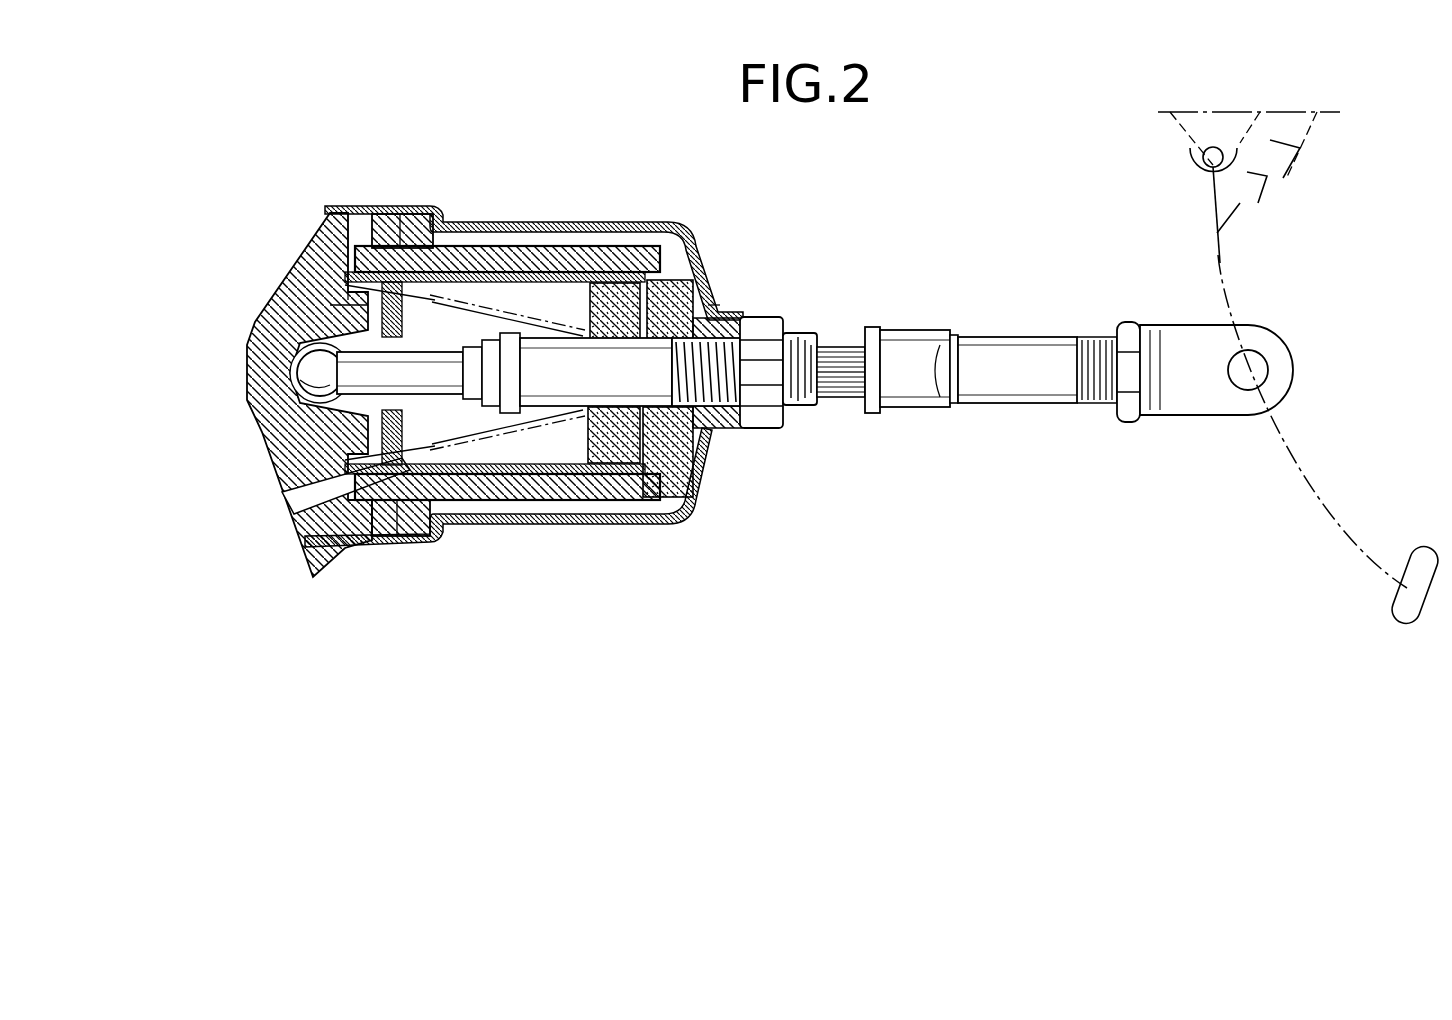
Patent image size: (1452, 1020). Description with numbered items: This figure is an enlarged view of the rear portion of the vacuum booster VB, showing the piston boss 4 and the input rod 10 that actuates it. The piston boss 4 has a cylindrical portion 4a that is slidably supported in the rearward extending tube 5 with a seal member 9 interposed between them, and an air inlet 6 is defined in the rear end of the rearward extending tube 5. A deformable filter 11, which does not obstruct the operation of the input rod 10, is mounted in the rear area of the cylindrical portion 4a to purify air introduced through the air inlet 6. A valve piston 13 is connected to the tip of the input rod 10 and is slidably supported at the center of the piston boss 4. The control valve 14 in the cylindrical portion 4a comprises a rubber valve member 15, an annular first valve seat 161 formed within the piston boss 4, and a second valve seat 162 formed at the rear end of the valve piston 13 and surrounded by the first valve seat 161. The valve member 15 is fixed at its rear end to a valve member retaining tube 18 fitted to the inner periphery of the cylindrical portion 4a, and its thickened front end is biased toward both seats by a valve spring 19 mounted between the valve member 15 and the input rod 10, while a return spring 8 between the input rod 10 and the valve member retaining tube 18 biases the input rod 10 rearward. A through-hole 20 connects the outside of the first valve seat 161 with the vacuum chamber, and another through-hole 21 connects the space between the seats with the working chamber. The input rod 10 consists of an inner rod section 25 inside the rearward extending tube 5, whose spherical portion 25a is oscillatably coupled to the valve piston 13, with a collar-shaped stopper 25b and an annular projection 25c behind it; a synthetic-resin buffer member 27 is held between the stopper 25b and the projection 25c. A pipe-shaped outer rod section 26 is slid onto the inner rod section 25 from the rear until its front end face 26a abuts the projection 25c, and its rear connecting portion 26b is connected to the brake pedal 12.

The piston boss 4 is at (258, 462).
The cylindrical portion 4a is at (533, 525).
The rearward extending tube 5 is at (600, 222).
The air inlet 6 is at (723, 306).
The return spring 8 is at (496, 278).
The seal member 9 is at (440, 212).
The input rod 10 is at (1052, 305).
The filter 11 is at (670, 514).
The brake pedal 12 is at (1416, 630).
The valve piston 13 is at (297, 373).
The control valve 14 is at (399, 214).
The valve member 15 is at (443, 538).
The first valve seat 161 is at (348, 284).
The second valve seat 162 is at (330, 306).
The valve member retaining tube 18 is at (556, 262).
The valve spring 19 is at (392, 318).
The through-hole 20 is at (290, 493).
The through-hole 21 is at (350, 260).
The inner rod section 25 is at (800, 432).
The spherical portion 25a is at (282, 420).
The collar-shaped stopper 25b is at (872, 327).
The annular projection 25c is at (952, 330).
The outer rod section 26 is at (1033, 412).
The front end face 26a is at (946, 405).
The connecting portion 26b is at (1283, 352).
The buffer member 27 is at (910, 407).
The vacuum booster VB is at (350, 582).